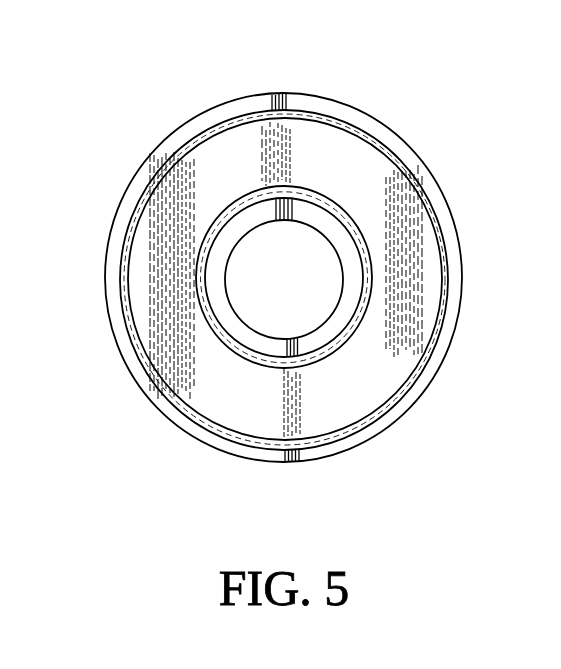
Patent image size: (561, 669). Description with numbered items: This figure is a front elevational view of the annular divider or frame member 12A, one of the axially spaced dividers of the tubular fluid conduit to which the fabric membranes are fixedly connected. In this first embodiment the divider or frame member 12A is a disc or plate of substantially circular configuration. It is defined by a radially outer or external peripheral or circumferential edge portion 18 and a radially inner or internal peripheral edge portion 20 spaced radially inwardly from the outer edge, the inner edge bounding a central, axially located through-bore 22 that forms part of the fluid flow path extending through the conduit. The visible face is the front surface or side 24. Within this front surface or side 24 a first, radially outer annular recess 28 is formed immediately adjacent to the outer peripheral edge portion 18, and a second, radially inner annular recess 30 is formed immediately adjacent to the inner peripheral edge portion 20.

The annular divider or frame member 12A is at (420, 170).
The radially outer peripheral edge portion 18 is at (286, 93).
The radially inner peripheral edge portion 20 is at (242, 325).
The central through-bore 22 is at (297, 305).
The front surface or side 24 is at (145, 232).
The first radially outer annular recess 28 is at (222, 436).
The second radially inner annular recess 30 is at (218, 215).